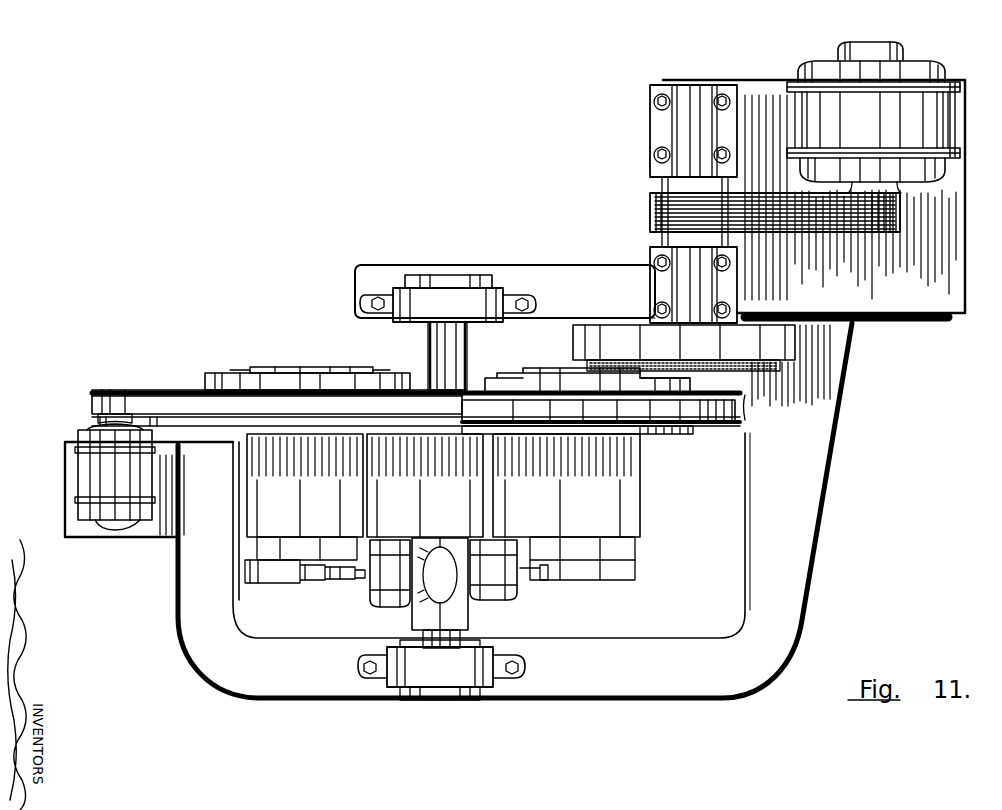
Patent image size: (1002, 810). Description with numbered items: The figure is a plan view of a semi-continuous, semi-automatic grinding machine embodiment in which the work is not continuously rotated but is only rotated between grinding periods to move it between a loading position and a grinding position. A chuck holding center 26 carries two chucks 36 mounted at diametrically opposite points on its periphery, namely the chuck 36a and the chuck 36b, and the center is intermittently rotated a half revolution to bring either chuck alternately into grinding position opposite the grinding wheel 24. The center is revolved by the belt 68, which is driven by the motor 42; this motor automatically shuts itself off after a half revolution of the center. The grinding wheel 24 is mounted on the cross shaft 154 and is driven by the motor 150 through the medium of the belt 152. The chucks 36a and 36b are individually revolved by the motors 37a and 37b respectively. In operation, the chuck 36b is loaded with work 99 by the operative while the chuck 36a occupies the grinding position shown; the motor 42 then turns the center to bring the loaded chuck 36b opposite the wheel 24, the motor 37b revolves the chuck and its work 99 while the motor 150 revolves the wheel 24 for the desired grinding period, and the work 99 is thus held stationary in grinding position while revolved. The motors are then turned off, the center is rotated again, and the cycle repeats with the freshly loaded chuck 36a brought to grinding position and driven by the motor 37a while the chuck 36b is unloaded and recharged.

The grinding wheel 24 is at (747, 400).
The chuck holding center 26 is at (660, 440).
The chucks 36 is at (475, 388).
The chuck 36a is at (249, 372).
The chuck 36b is at (527, 372).
The motor 37a is at (380, 598).
The motor 37b is at (505, 597).
The motor 42 is at (82, 442).
The belt 68 is at (148, 400).
The work 99 is at (337, 367).
The motor 150 is at (946, 70).
The belt 152 is at (651, 216).
The cross shaft 154 is at (656, 182).